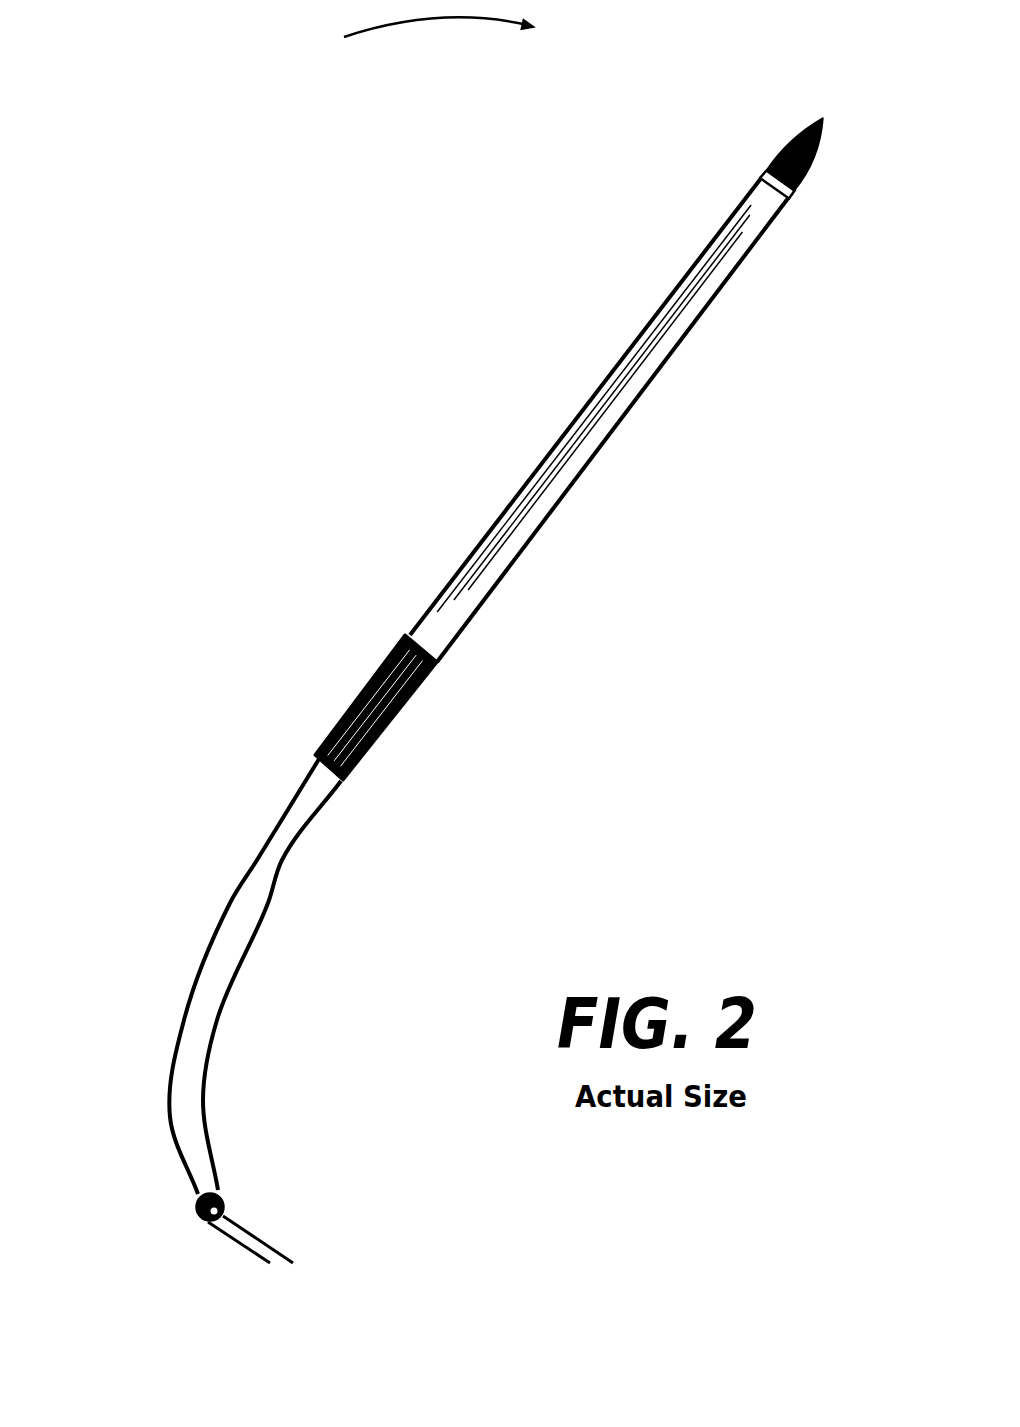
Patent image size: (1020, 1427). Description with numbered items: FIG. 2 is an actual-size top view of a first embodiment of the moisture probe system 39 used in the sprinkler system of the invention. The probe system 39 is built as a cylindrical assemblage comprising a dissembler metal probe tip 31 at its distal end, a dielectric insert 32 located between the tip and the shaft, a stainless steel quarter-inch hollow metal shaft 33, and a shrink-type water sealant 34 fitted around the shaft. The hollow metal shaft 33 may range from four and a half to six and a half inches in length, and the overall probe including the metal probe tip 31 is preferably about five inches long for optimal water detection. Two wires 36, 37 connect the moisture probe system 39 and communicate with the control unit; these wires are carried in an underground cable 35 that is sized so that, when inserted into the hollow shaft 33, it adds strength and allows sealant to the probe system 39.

The dissembler metal probe tip 31 is at (782, 148).
The dielectric insert 32 is at (793, 195).
The hollow metal shaft 33 is at (597, 388).
The shrink-type water sealant 34 is at (372, 678).
The underground cable 35 is at (230, 903).
The wire 36 is at (226, 1234).
The wire 37 is at (261, 1240).
The moisture probe system 39 is at (420, 35).